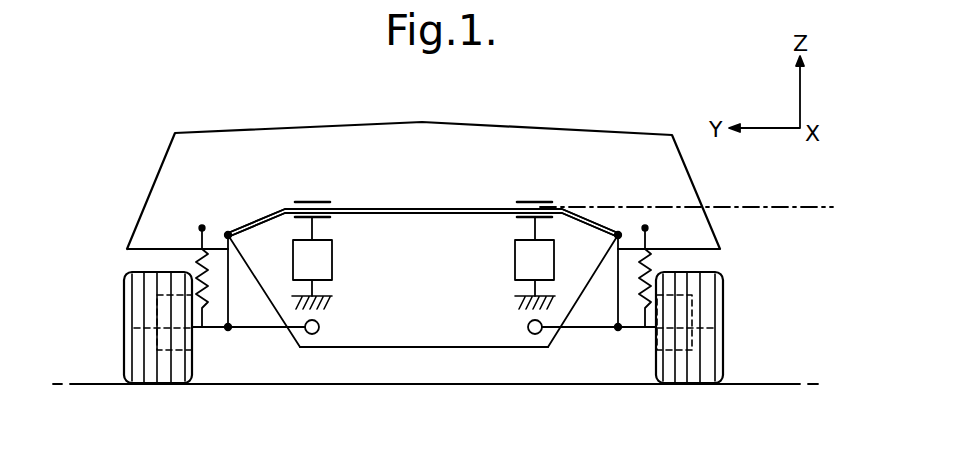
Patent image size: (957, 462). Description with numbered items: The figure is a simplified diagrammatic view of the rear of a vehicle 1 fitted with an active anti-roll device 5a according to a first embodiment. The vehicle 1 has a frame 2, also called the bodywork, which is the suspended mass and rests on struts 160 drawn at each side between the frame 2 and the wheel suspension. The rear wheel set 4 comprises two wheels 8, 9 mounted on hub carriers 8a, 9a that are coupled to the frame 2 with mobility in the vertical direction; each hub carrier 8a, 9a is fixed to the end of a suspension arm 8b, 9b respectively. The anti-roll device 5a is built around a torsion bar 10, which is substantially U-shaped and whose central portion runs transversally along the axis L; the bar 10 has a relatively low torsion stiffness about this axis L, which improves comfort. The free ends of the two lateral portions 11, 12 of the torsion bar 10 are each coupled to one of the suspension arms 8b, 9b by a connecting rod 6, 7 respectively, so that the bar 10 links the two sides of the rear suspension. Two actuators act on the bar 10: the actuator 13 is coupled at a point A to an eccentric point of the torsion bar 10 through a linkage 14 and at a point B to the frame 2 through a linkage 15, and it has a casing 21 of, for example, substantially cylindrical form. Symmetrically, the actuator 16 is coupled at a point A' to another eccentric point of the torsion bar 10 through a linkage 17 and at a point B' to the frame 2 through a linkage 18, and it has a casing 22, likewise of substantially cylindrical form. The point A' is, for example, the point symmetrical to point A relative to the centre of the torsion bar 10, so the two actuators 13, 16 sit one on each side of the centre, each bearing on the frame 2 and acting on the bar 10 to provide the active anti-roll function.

The vehicle 1 is at (565, 120).
The frame 2 is at (350, 126).
The rear wheel set 4 is at (212, 333).
The active anti-roll device 5a is at (402, 188).
The connecting rod 6 is at (232, 270).
The connecting rod 7 is at (613, 269).
The wheel 8 is at (123, 302).
The hub carrier 8a is at (123, 336).
The suspension arm 8b is at (268, 330).
The wheel 9 is at (724, 302).
The hub carrier 9a is at (724, 338).
The suspension arm 9b is at (583, 330).
The torsion bar 10 is at (445, 207).
The lateral portion 11 is at (253, 219).
The lateral portion 12 is at (596, 216).
The actuator 13 is at (333, 253).
The linkage 14 is at (316, 201).
The linkage 15 is at (266, 292).
The actuator 16 is at (514, 253).
The linkage 17 is at (532, 201).
The linkage 18 is at (579, 292).
The casing 21 is at (333, 268).
The casing 22 is at (514, 268).
The struts 160 is at (200, 262).
The coupling point A is at (341, 196).
The coupling point A' is at (509, 203).
The coupling point B is at (342, 298).
The coupling point B' is at (503, 300).
The axis L is at (810, 207).